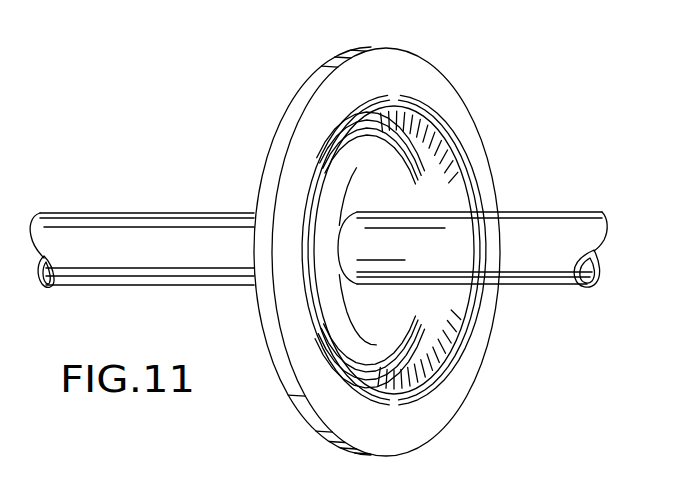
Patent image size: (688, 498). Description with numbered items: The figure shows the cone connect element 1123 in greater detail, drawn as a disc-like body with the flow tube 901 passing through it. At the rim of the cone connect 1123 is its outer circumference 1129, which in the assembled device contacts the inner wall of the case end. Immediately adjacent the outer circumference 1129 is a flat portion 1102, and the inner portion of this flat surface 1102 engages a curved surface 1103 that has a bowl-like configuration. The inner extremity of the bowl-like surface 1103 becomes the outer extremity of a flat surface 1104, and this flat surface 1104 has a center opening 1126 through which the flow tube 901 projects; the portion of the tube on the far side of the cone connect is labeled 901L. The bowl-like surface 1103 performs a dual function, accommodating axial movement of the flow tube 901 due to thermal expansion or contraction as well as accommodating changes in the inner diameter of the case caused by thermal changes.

The cone connect element 1123 is at (495, 105).
The flat portion 1102 is at (353, 80).
The curved surface 1103 is at (453, 170).
The flat surface 1104 is at (360, 188).
The center opening 1126 is at (397, 312).
The outer circumference 1129 is at (437, 438).
The flow tube 901 is at (542, 257).
The left portion of tubular member 901L is at (187, 247).